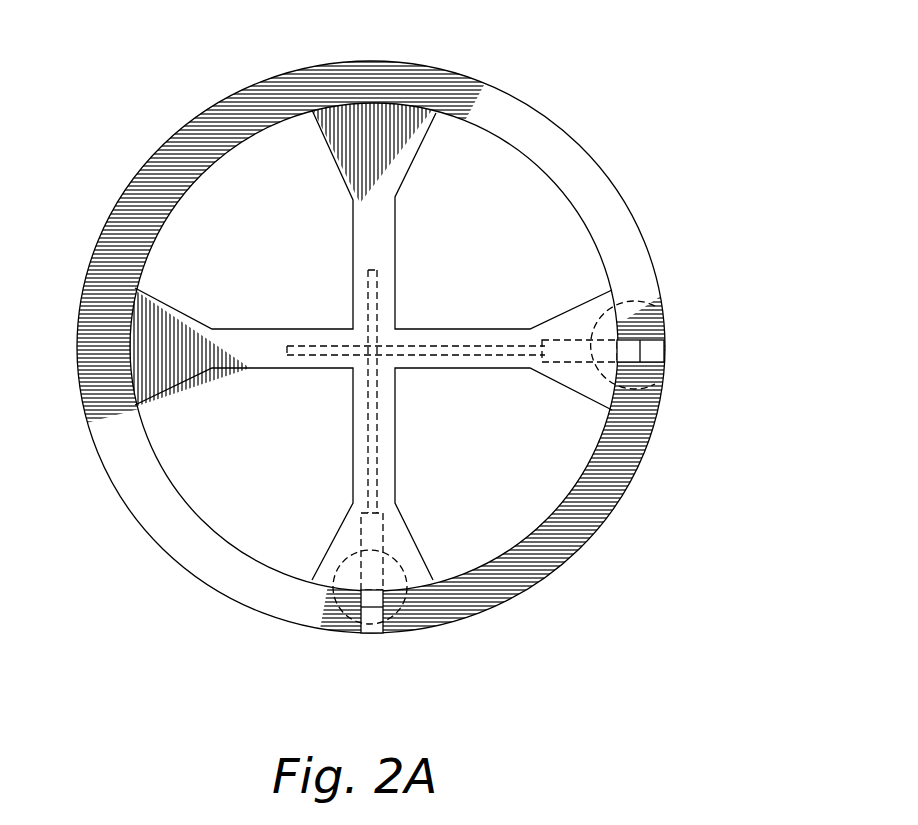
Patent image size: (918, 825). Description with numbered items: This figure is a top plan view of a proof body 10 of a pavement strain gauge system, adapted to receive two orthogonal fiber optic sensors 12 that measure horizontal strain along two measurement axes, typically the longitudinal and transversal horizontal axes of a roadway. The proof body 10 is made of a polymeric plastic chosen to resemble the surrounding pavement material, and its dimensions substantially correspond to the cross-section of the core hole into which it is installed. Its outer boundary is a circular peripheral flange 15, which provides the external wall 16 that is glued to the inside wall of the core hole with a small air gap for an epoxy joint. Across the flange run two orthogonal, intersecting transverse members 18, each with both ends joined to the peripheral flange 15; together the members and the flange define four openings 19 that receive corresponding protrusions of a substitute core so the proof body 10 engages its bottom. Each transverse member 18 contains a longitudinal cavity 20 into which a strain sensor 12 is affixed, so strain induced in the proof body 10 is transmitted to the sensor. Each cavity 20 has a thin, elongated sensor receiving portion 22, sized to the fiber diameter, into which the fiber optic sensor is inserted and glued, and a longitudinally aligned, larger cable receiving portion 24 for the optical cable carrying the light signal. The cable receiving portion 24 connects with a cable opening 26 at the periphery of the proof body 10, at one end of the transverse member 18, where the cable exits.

The proof body 10 is at (595, 158).
The fiber optic sensor 12 is at (667, 390).
The circular peripheral flange 15 is at (535, 108).
The external wall 16 is at (650, 237).
The transverse member 18 is at (398, 245).
The opening 19 is at (268, 256).
The longitudinal cavity 20 is at (660, 301).
The sensor receiving portion 22 is at (472, 350).
The cable receiving portion 24 is at (565, 362).
The cable opening 26 is at (667, 349).